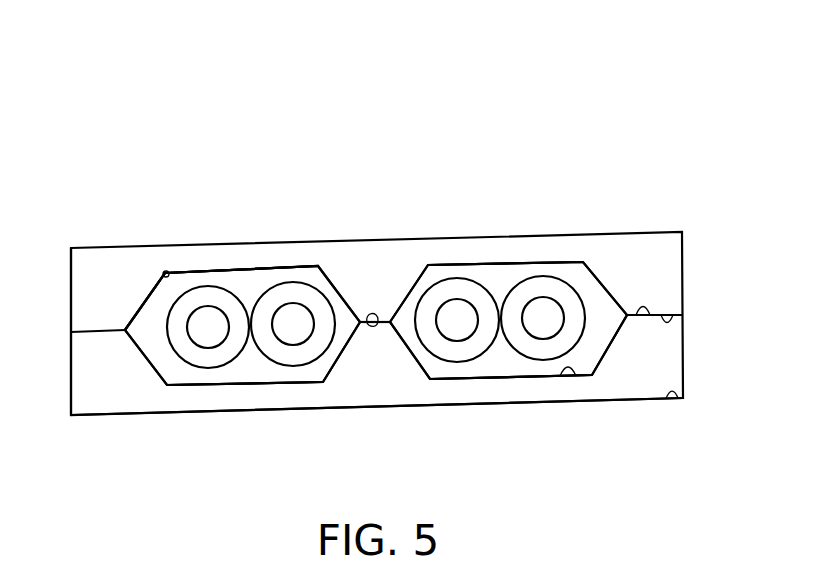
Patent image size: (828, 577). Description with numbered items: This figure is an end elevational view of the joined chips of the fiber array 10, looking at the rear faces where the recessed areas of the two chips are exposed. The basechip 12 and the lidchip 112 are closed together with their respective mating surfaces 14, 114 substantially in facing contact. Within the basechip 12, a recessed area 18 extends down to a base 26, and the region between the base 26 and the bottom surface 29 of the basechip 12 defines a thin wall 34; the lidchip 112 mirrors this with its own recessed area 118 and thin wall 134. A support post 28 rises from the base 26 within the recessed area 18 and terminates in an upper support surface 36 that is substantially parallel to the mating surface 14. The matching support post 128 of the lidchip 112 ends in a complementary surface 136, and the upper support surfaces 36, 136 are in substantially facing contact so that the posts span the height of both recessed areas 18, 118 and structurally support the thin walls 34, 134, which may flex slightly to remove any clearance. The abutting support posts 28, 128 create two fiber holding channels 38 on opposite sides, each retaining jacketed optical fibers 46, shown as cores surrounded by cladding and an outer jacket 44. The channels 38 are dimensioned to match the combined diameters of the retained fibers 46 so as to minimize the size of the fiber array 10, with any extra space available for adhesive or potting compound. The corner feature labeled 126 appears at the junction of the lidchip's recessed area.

The fiber array 10 is at (623, 88).
The basechip 12 is at (135, 432).
The mating surface 14 is at (650, 313).
The recessed area 18 is at (503, 360).
The base 26 is at (578, 375).
The support post 28 is at (383, 367).
The bottom surface 29 is at (677, 402).
The thin wall 34 is at (480, 390).
The upper support surface 36 is at (372, 322).
The fiber holding channels 38 is at (577, 270).
The jacket 44 is at (228, 353).
The optical fibers 46 is at (192, 367).
The lidchip 112 is at (293, 212).
The mating surface 114 is at (675, 310).
The recessed area 118 is at (500, 272).
The corner 126 is at (163, 275).
The support post 128 is at (367, 277).
The thin wall 134 is at (230, 260).
The complementary surface 136 is at (390, 322).